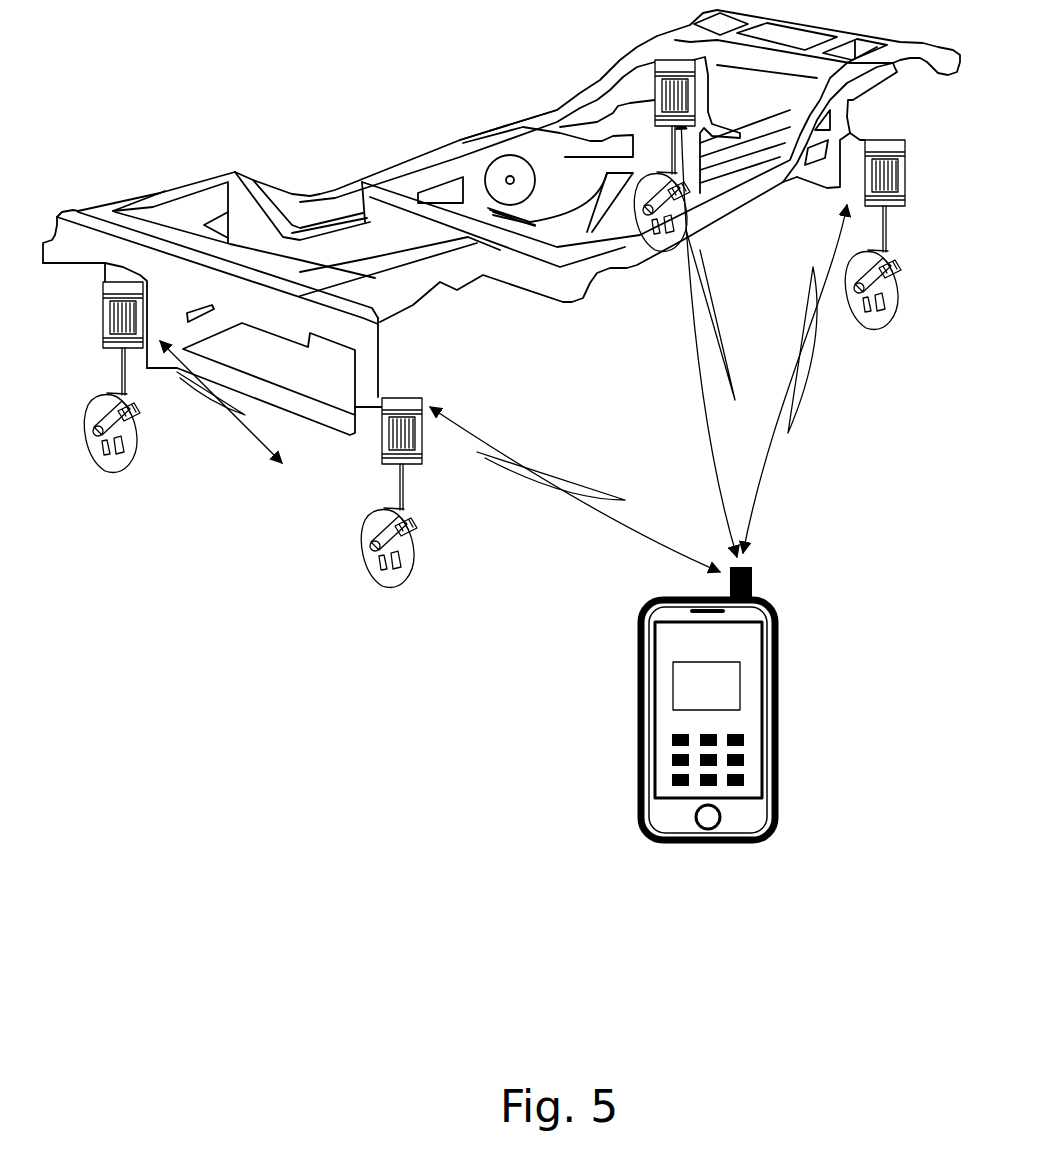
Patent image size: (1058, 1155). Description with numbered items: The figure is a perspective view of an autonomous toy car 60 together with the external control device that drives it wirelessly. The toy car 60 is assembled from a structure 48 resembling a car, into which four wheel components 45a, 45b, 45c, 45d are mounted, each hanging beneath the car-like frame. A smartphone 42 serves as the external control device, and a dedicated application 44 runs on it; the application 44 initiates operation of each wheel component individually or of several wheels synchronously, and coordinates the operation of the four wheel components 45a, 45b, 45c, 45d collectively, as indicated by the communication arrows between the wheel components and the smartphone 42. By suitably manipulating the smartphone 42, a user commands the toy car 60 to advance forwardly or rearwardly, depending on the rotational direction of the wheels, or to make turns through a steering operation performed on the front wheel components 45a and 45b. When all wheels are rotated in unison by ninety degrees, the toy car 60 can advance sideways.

The autonomous toy car 60 is at (272, 127).
The structure resembling a car 48 is at (557, 113).
The wheel component 45a is at (110, 455).
The wheel component 45b is at (365, 557).
The wheel component 45c is at (657, 252).
The wheel component 45d is at (877, 317).
The smartphone 42 is at (780, 693).
The dedicated application 44 is at (673, 678).